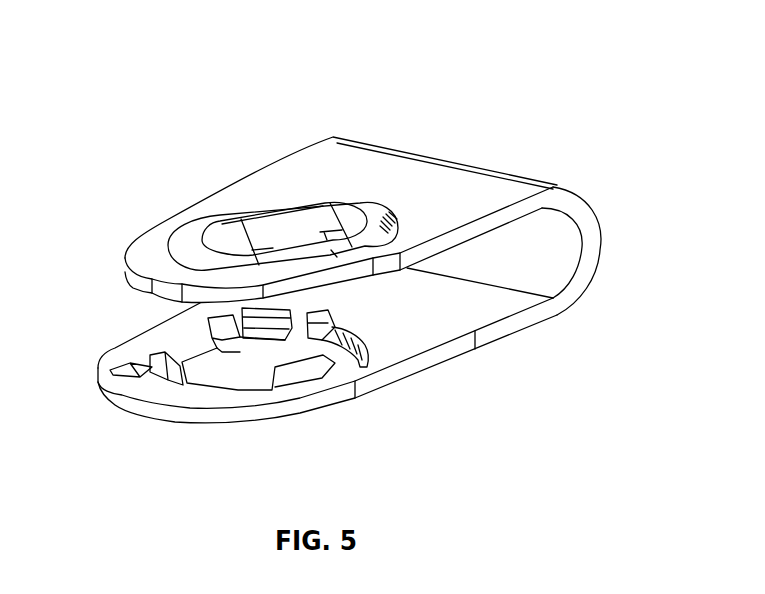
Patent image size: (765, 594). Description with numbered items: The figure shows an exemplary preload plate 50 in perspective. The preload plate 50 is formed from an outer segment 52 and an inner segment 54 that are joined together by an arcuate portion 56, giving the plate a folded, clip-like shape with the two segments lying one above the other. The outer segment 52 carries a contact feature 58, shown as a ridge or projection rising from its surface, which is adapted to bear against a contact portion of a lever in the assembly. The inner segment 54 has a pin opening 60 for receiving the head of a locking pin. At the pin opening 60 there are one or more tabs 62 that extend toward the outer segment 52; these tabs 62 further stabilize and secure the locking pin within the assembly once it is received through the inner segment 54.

The preload plate 50 is at (489, 69).
The outer segment 52 is at (470, 197).
The inner segment 54 is at (470, 338).
The arcuate portion 56 is at (588, 228).
The contact feature 58 is at (267, 232).
The pin opening 60 is at (247, 350).
The tabs 62 is at (157, 350).